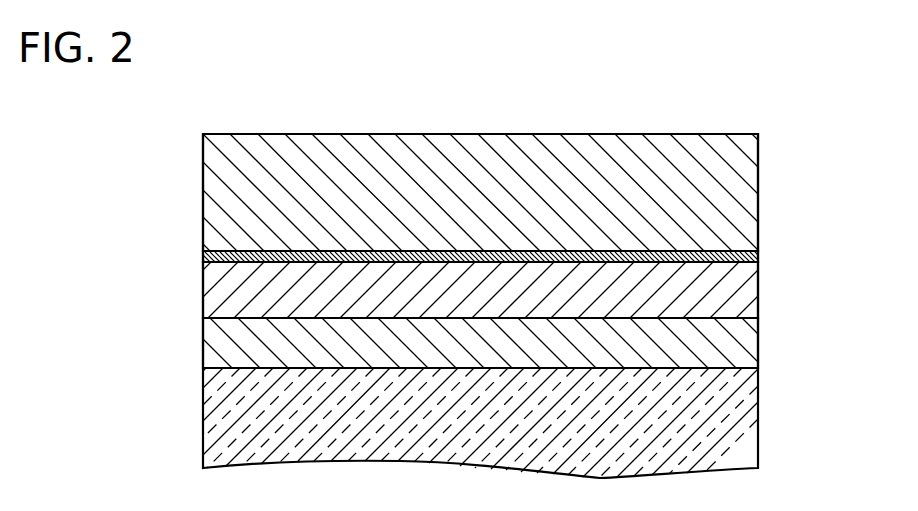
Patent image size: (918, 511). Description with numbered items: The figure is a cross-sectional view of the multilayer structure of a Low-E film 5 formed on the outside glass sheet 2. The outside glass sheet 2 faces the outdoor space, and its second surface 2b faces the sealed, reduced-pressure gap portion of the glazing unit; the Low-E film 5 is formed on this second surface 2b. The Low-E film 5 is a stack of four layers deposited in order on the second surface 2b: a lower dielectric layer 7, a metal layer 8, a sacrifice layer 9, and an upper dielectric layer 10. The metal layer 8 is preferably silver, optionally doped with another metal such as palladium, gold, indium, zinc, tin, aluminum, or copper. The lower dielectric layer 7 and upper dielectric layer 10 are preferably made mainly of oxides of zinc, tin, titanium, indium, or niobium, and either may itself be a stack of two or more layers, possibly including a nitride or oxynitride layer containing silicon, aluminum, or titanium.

The outside glass sheet 2 is at (247, 414).
The second surface 2b is at (272, 366).
The Low-E film 5 is at (863, 178).
The lower dielectric layer 7 is at (737, 345).
The metal layer 8 is at (747, 288).
The sacrifice layer 9 is at (760, 257).
The upper dielectric layer 10 is at (730, 188).